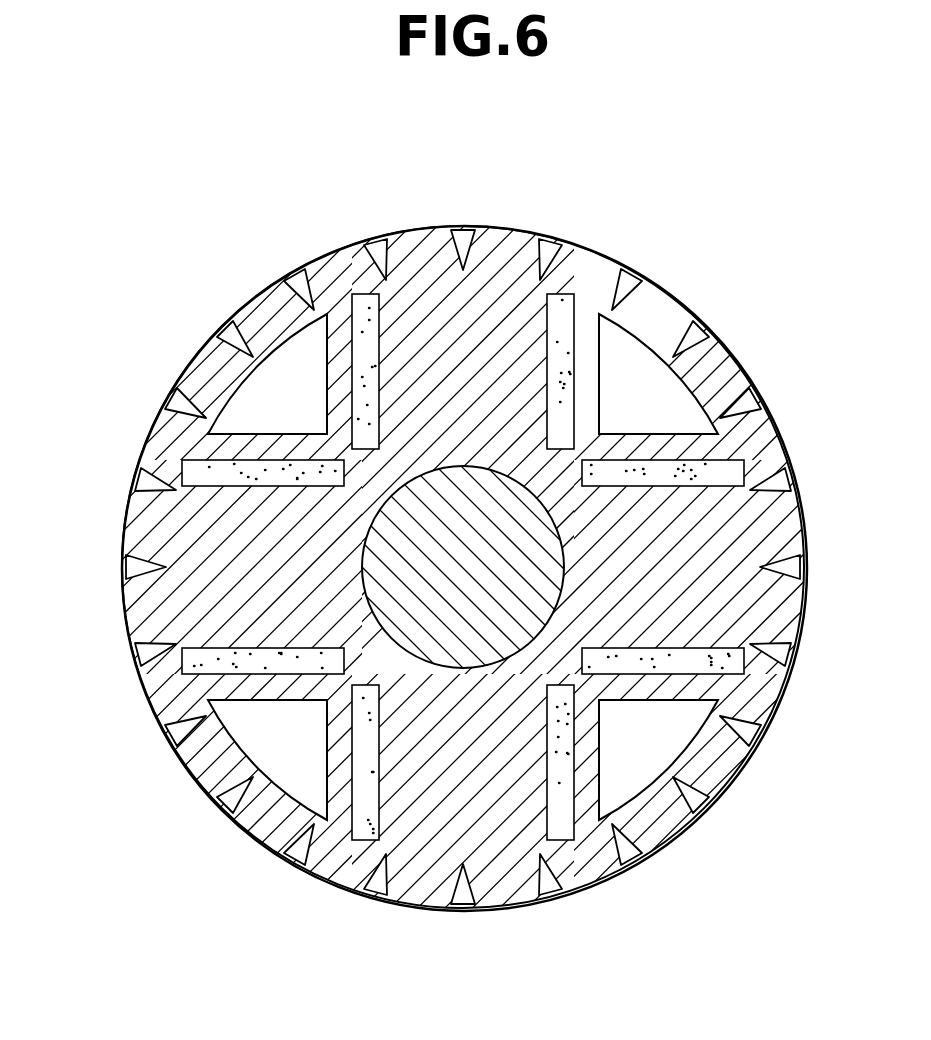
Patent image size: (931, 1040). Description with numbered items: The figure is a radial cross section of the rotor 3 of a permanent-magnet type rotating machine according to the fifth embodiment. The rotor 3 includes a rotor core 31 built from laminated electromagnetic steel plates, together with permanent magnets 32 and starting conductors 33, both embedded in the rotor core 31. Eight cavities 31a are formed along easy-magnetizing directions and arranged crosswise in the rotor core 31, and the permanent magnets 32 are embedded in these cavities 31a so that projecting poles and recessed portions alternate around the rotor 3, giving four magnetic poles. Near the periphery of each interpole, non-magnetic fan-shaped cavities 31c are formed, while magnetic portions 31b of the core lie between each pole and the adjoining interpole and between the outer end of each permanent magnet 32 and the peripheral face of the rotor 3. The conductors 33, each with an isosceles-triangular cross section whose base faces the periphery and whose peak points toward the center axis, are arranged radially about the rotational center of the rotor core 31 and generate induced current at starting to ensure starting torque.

The rotor 3 is at (465, 538).
The rotor core 31 is at (465, 536).
The cavity 31a is at (233, 657).
The magnetic portion 31b is at (562, 278).
The fan-shaped cavity 31c is at (277, 765).
The permanent magnet 32 is at (165, 652).
The starting conductor 33 is at (626, 840).